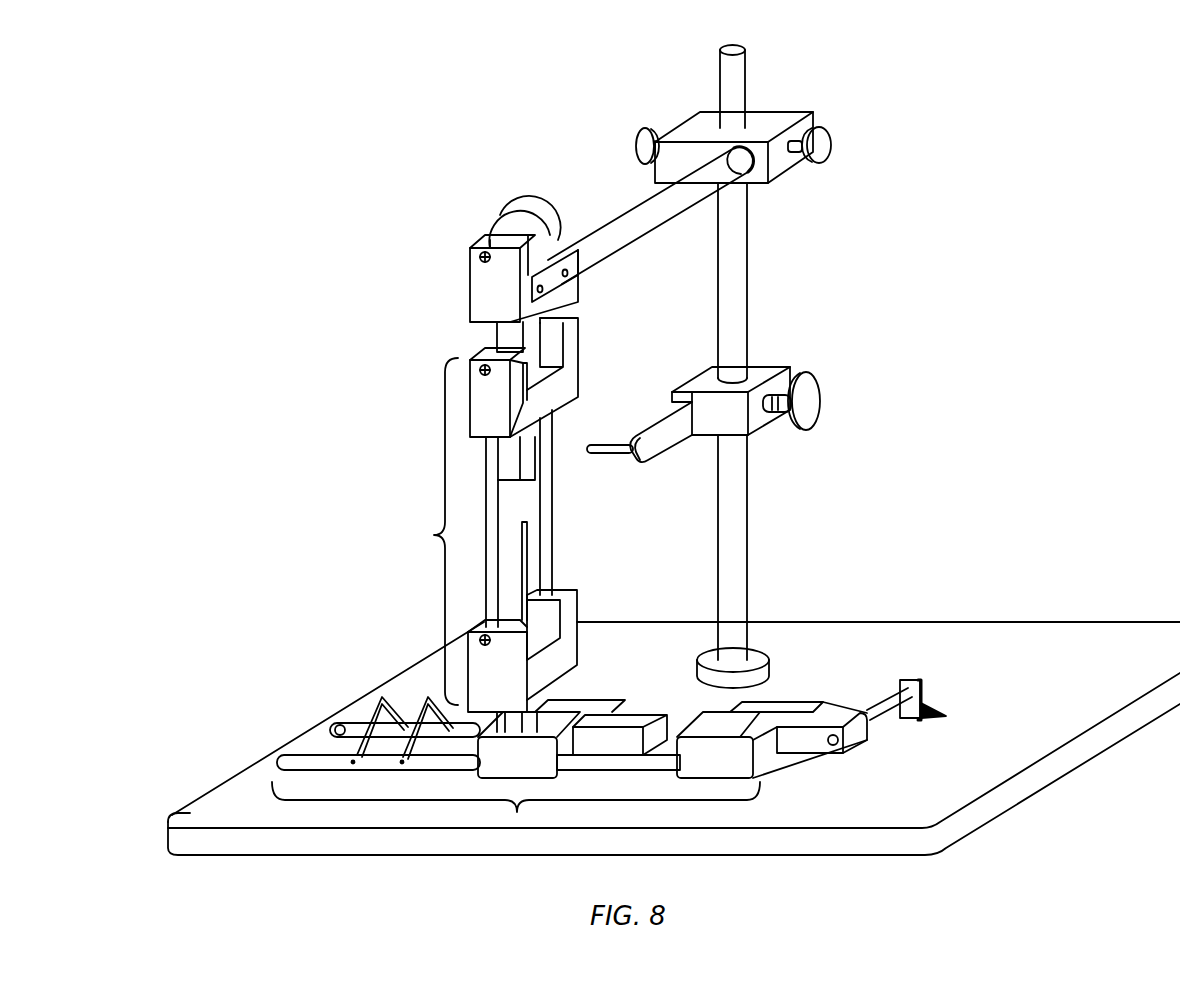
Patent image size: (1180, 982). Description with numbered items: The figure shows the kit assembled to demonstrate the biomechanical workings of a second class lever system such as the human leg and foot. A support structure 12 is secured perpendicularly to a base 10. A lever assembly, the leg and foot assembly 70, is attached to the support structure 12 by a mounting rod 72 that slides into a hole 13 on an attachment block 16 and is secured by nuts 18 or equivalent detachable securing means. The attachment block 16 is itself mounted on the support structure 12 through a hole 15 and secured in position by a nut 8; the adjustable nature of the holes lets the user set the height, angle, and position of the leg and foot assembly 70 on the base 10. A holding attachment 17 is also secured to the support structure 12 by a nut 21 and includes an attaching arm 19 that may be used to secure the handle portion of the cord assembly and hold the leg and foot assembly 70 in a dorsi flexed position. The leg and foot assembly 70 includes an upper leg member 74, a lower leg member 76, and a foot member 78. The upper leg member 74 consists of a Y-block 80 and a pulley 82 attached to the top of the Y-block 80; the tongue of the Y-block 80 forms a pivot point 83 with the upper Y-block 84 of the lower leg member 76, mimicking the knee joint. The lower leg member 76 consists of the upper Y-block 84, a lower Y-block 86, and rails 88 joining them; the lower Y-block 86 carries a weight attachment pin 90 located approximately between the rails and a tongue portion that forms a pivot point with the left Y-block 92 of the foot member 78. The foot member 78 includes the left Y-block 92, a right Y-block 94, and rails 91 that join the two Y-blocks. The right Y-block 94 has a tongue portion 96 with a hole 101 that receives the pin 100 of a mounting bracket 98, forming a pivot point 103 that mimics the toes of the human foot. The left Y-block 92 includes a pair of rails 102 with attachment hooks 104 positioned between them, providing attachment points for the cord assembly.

The base 10 is at (1032, 788).
The hole 15 is at (750, 112).
The attachment block 16 is at (797, 116).
The nut 8 is at (637, 147).
The nuts 18 is at (823, 148).
The mounting rod 72 is at (648, 203).
The hole 13 is at (752, 170).
The support structure 12 is at (740, 283).
The pulley 82 is at (508, 217).
The upper leg member 74 is at (404, 283).
The Y-block 80 is at (477, 300).
The upper Y-block 84 is at (573, 317).
The pivot point 83 is at (497, 346).
The leg and foot assembly 70 is at (624, 384).
The holding attachment 17 is at (775, 370).
The nut 21 is at (822, 410).
The attaching arm 19 is at (663, 440).
The rails 88 is at (490, 505).
The weight attachment pin 90 is at (524, 553).
The lower leg member 76 is at (423, 531).
The lower Y-block 86 is at (573, 612).
The rails 102 is at (352, 728).
The attachment hooks 104 is at (427, 693).
The foot member 78 is at (516, 782).
The rails 91 is at (667, 762).
The left Y-block 92 is at (600, 703).
The right Y-block 94 is at (790, 705).
The tongue portion 96 is at (837, 713).
The pivot point 103 is at (868, 733).
The hole 101 is at (832, 746).
The pin 100 is at (900, 714).
The mounting bracket 98 is at (920, 705).